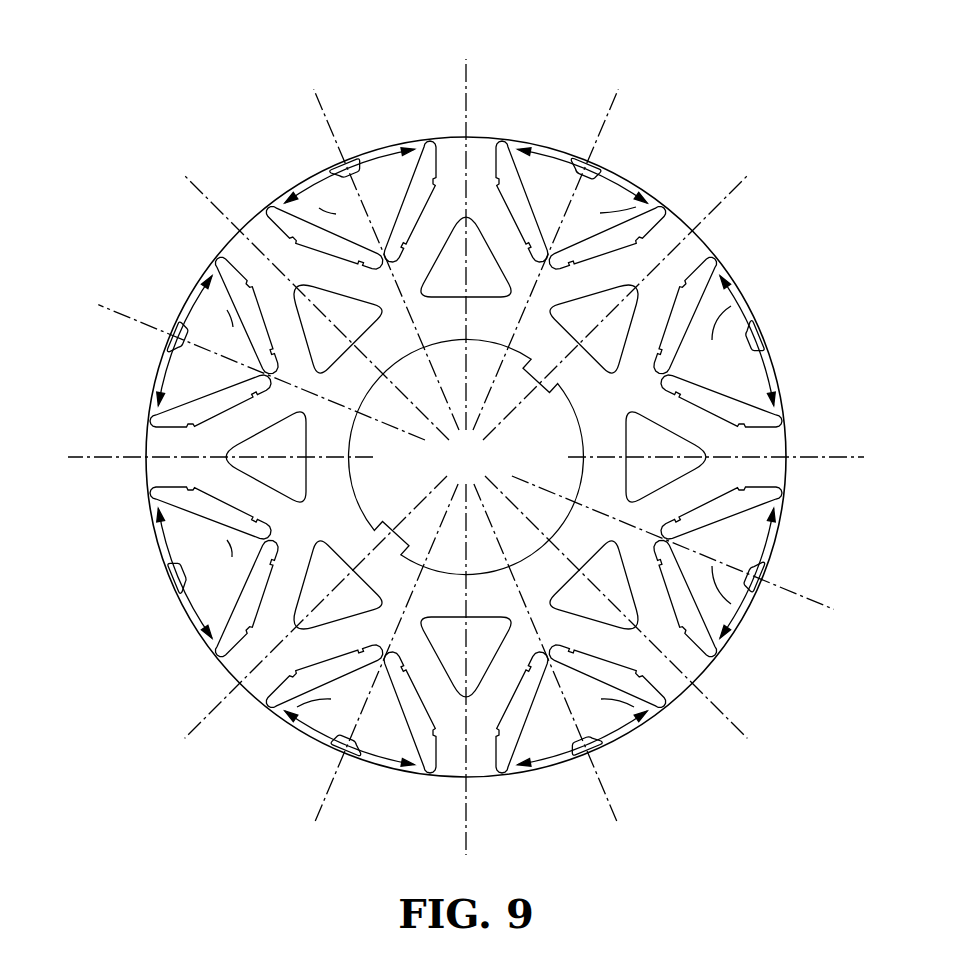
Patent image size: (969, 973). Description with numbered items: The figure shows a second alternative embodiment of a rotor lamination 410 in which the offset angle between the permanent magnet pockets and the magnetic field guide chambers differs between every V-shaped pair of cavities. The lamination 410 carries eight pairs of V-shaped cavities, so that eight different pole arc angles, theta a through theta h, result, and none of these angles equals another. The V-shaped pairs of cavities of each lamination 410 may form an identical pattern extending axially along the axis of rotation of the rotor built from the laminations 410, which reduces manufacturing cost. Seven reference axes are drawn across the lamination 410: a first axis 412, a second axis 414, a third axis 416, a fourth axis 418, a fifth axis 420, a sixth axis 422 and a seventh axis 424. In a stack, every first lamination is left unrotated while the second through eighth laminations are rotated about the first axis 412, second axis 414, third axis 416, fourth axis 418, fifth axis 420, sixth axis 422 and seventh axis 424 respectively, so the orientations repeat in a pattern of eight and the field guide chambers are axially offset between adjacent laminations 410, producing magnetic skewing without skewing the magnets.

The lamination 410 is at (231, 73).
The first axis 412 is at (106, 463).
The second axis 414 is at (136, 330).
The third axis 416 is at (222, 200).
The fourth axis 418 is at (337, 133).
The fifth axis 420 is at (462, 94).
The sixth axis 422 is at (600, 118).
The seventh axis 424 is at (727, 193).